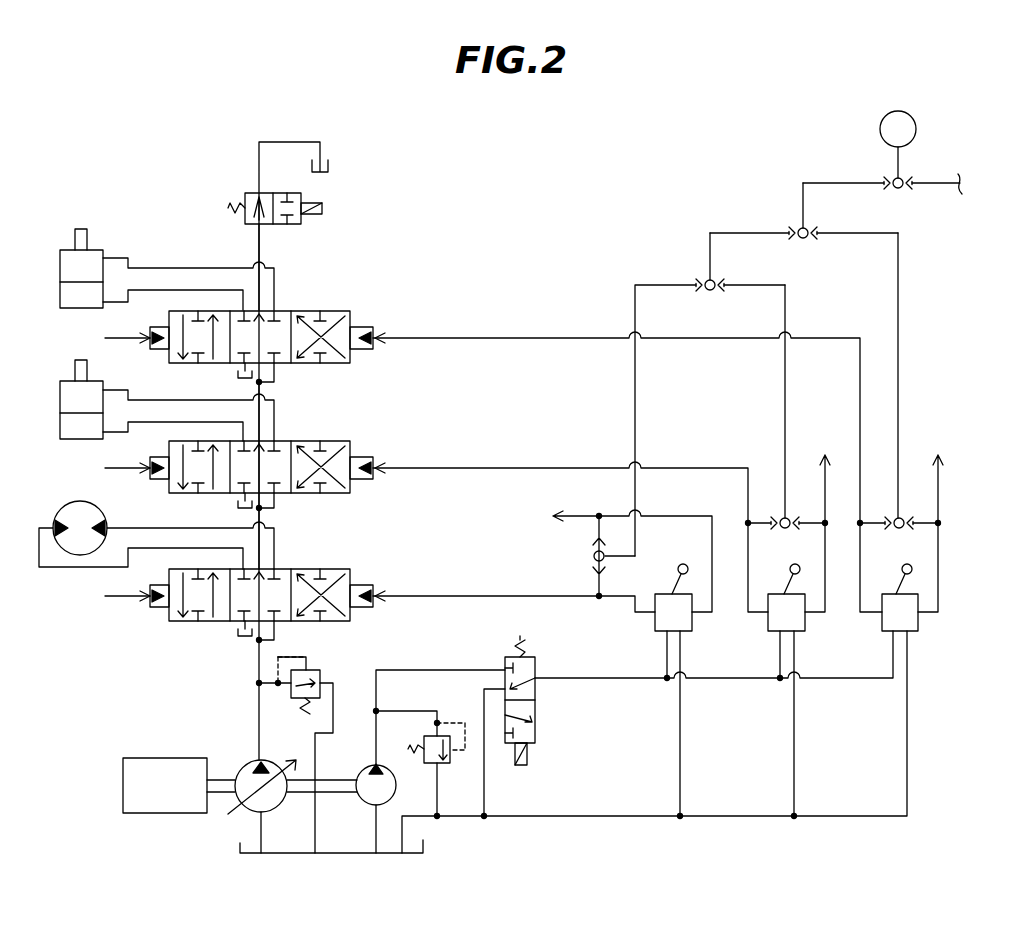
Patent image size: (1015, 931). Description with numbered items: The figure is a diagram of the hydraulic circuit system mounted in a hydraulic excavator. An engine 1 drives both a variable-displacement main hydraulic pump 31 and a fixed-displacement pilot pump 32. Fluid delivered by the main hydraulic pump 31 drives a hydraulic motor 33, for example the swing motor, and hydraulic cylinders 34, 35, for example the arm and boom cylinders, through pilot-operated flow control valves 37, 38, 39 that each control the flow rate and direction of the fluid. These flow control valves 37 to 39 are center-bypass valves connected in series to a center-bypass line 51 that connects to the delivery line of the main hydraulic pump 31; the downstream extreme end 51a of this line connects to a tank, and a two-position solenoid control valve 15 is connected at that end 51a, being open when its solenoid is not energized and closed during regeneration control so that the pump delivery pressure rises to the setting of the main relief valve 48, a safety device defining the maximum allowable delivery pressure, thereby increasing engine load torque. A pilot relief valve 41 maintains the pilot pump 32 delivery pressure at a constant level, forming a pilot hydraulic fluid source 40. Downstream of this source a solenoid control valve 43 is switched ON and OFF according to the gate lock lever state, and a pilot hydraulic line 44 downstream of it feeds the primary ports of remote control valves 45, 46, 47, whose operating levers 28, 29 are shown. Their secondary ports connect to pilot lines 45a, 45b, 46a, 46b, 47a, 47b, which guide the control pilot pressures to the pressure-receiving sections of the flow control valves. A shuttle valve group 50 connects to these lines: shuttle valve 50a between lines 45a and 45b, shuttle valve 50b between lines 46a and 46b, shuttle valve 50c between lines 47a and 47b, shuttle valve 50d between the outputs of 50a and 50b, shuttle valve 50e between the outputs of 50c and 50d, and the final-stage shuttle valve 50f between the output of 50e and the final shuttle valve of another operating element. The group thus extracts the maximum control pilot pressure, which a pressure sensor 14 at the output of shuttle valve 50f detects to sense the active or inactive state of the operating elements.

The engine 1 is at (167, 815).
The pressure sensor 14 is at (918, 129).
The solenoid control valve 15 is at (257, 193).
The operating lever 28 is at (676, 580).
The operating lever 29 is at (788, 580).
The main hydraulic pump 31 is at (246, 762).
The pilot pump 32 is at (368, 765).
The hydraulic motor 33 is at (58, 510).
The hydraulic cylinder 34 is at (58, 401).
The hydraulic cylinder 35 is at (58, 270).
The flow control valve 37 is at (345, 569).
The flow control valve 38 is at (345, 441).
The flow control valve 39 is at (345, 311).
The pilot hydraulic fluid source 40 is at (448, 666).
The pilot relief valve 41 is at (456, 758).
The solenoid control valve 43 is at (540, 706).
The pilot hydraulic line 44 is at (626, 682).
The remote control valve 45 is at (652, 628).
The pilot line 45a is at (562, 600).
The pilot line 45b is at (692, 514).
The remote control valve 46 is at (766, 628).
The pilot line 46a is at (690, 462).
The pilot line 46b is at (826, 478).
The remote control valve 47 is at (880, 628).
The pilot line 47a is at (724, 346).
The pilot line 47b is at (941, 494).
The main relief valve 48 is at (320, 663).
The shuttle valve group 50 is at (759, 174).
The shuttle valve 50a is at (594, 571).
The shuttle valve 50b is at (776, 512).
The shuttle valve 50c is at (910, 530).
The shuttle valve 50d is at (704, 280).
The shuttle valve 50e is at (818, 240).
The final-stage shuttle valve 50f is at (916, 190).
The center-bypass line 51 is at (257, 522).
The downstream extreme end 51a is at (257, 256).